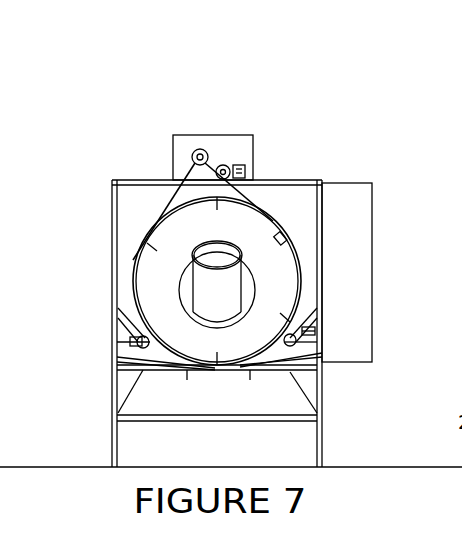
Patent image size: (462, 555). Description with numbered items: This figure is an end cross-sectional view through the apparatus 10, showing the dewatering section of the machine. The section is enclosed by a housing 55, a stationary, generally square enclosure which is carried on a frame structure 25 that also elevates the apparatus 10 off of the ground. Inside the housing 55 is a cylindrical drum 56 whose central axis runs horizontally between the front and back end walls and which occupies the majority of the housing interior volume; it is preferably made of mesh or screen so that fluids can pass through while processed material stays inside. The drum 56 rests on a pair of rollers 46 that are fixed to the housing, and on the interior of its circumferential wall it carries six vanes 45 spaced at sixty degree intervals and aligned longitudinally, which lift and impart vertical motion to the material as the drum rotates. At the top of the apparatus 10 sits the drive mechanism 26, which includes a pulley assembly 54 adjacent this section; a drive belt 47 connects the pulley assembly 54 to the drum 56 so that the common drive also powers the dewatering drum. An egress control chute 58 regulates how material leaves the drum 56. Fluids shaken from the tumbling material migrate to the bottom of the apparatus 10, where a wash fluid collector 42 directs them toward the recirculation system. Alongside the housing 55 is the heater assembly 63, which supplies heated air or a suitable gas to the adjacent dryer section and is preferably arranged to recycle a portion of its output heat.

The apparatus 10 is at (146, 101).
The frame structure 25 is at (323, 421).
The drive mechanism 26 is at (247, 130).
The pulley assembly 54 is at (200, 150).
The drive belt 47 is at (228, 182).
The housing 55 is at (120, 216).
The drum 56 is at (187, 205).
The egress control chute 58 is at (230, 288).
The vanes 45 is at (282, 238).
The rollers 46 is at (310, 312).
The wash fluid collector 42 is at (140, 363).
The heater assembly 63 is at (355, 333).